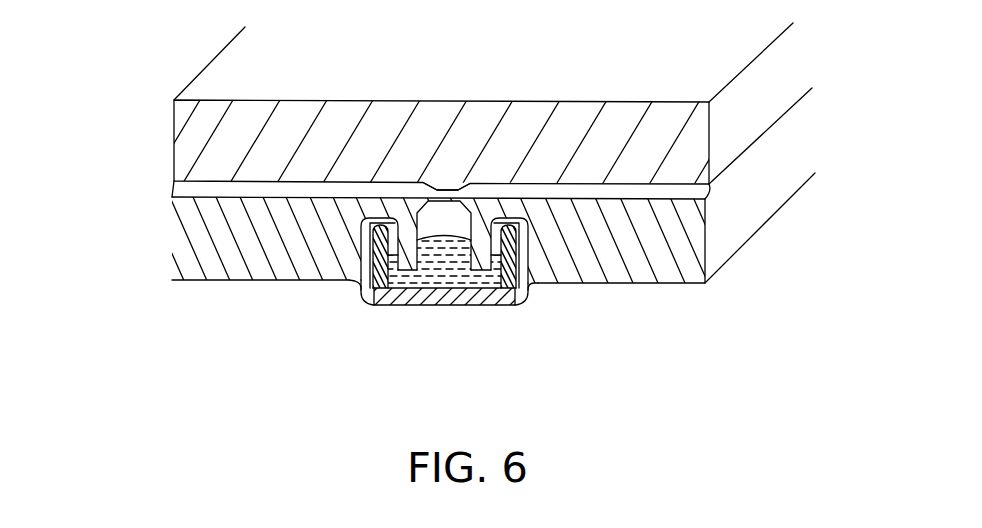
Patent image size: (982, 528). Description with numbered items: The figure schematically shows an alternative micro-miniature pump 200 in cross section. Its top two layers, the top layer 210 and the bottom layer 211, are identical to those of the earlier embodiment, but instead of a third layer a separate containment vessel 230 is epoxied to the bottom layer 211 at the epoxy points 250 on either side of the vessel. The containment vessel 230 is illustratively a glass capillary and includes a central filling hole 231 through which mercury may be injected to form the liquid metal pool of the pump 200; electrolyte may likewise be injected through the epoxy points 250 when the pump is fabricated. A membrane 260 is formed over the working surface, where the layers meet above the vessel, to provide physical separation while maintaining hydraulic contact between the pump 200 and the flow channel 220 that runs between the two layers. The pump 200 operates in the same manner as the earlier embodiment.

The micropump 200 is at (358, 356).
The top layer 210 is at (780, 80).
The bottom layer 211 is at (795, 152).
The flow channel 220 is at (218, 188).
The containment vessel 230 is at (502, 225).
The central filling hole 231 is at (444, 285).
The epoxy points 250 is at (361, 301).
The membrane 260 is at (433, 187).